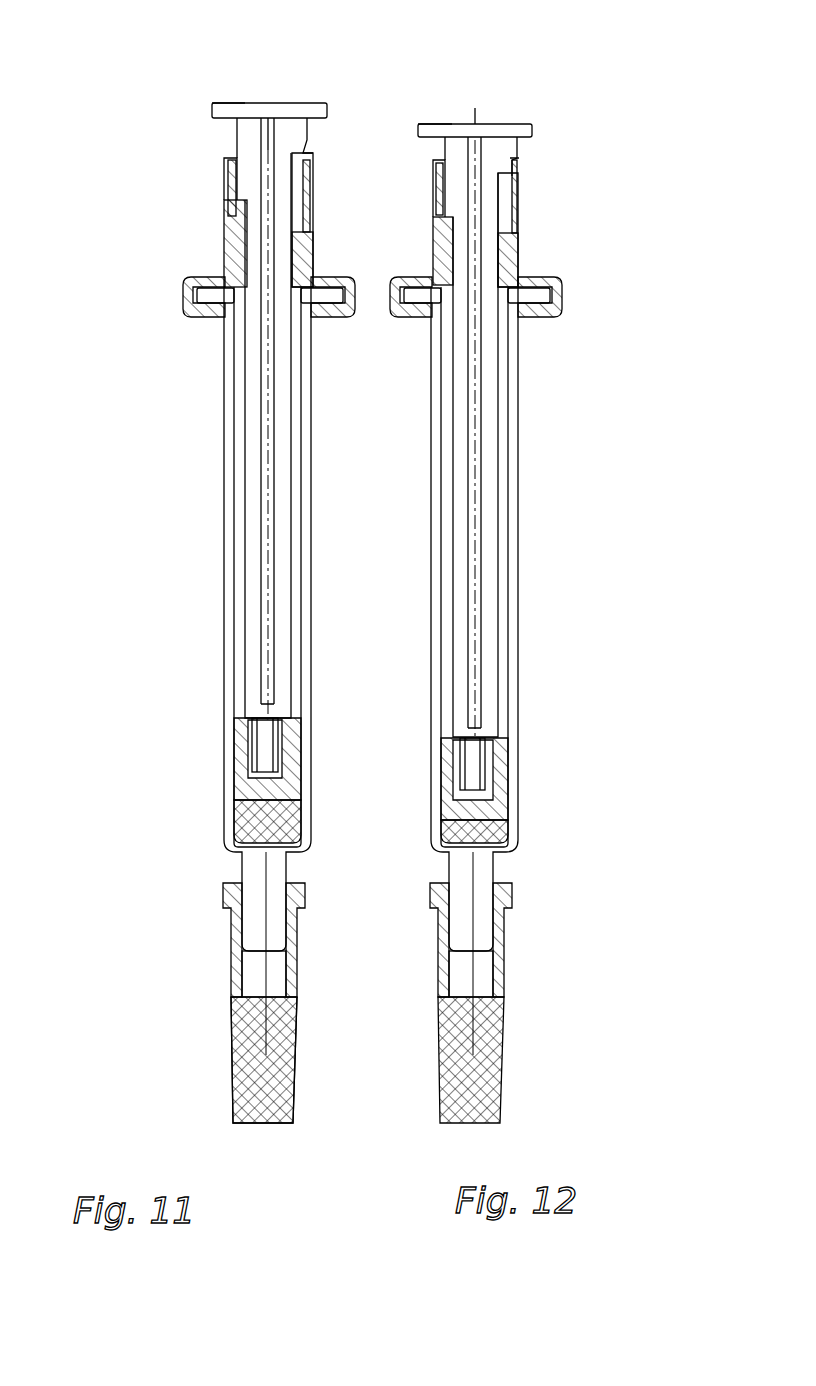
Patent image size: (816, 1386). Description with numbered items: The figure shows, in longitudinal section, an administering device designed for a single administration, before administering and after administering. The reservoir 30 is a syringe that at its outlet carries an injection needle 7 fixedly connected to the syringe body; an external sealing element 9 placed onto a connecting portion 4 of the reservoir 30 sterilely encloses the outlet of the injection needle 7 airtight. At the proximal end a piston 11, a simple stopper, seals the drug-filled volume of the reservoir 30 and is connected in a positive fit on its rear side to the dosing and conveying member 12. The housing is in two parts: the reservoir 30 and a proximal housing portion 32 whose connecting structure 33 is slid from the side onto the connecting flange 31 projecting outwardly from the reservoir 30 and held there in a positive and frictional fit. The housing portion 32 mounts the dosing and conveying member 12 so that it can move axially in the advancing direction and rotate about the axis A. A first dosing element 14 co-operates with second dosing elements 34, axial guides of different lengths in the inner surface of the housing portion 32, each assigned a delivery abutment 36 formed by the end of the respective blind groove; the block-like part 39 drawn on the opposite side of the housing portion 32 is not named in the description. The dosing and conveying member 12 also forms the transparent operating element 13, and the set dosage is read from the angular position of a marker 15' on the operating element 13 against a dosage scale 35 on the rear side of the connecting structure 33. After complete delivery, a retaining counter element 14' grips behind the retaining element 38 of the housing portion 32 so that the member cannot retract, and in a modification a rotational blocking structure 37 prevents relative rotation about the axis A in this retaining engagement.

In FIG. 11, the connecting portion 4 is at (248, 920).
In FIG. 11, the injection needle 7 is at (262, 975).
In FIG. 12, the injection needle 7 is at (500, 974).
In FIG. 11, the external sealing element 9 is at (240, 1088).
In FIG. 12, the external sealing element 9 is at (497, 1060).
In FIG. 11, the piston 11 is at (245, 785).
In FIG. 12, the piston 11 is at (521, 790).
In FIG. 11, the dosing and conveying member 12 is at (258, 470).
In FIG. 12, the dosing and conveying member 12 is at (525, 455).
In FIG. 11, the operating element 13 is at (322, 105).
In FIG. 12, the operating element 13 is at (519, 93).
In FIG. 11, the first dosing element 14 is at (188, 417).
In FIG. 11, the retaining counter element 14' is at (344, 127).
In FIG. 11, the marker 15' is at (244, 81).
In FIG. 12, the marker 15' is at (466, 87).
In FIG. 11, the reservoir 30 is at (228, 600).
In FIG. 12, the reservoir 30 is at (512, 671).
In FIG. 12, the connecting flange 31 is at (514, 325).
In FIG. 12, the proximal housing portion 32 is at (573, 230).
In FIG. 12, the connecting structure 33 is at (518, 296).
In FIG. 11, the second dosing elements 34 is at (240, 210).
In FIG. 11, the dosage scale 35 is at (212, 267).
In FIG. 11, the delivery abutment 36 is at (240, 232).
In FIG. 12, the rotational blocking structure 37 is at (553, 178).
In FIG. 11, the retaining element 38 is at (305, 160).
In FIG. 12, the retaining element 38 is at (570, 168).
In FIG. 11, the locking block 39 is at (300, 252).
In FIG. 11, the axis A is at (267, 743).
In FIG. 12, the axis A is at (523, 749).